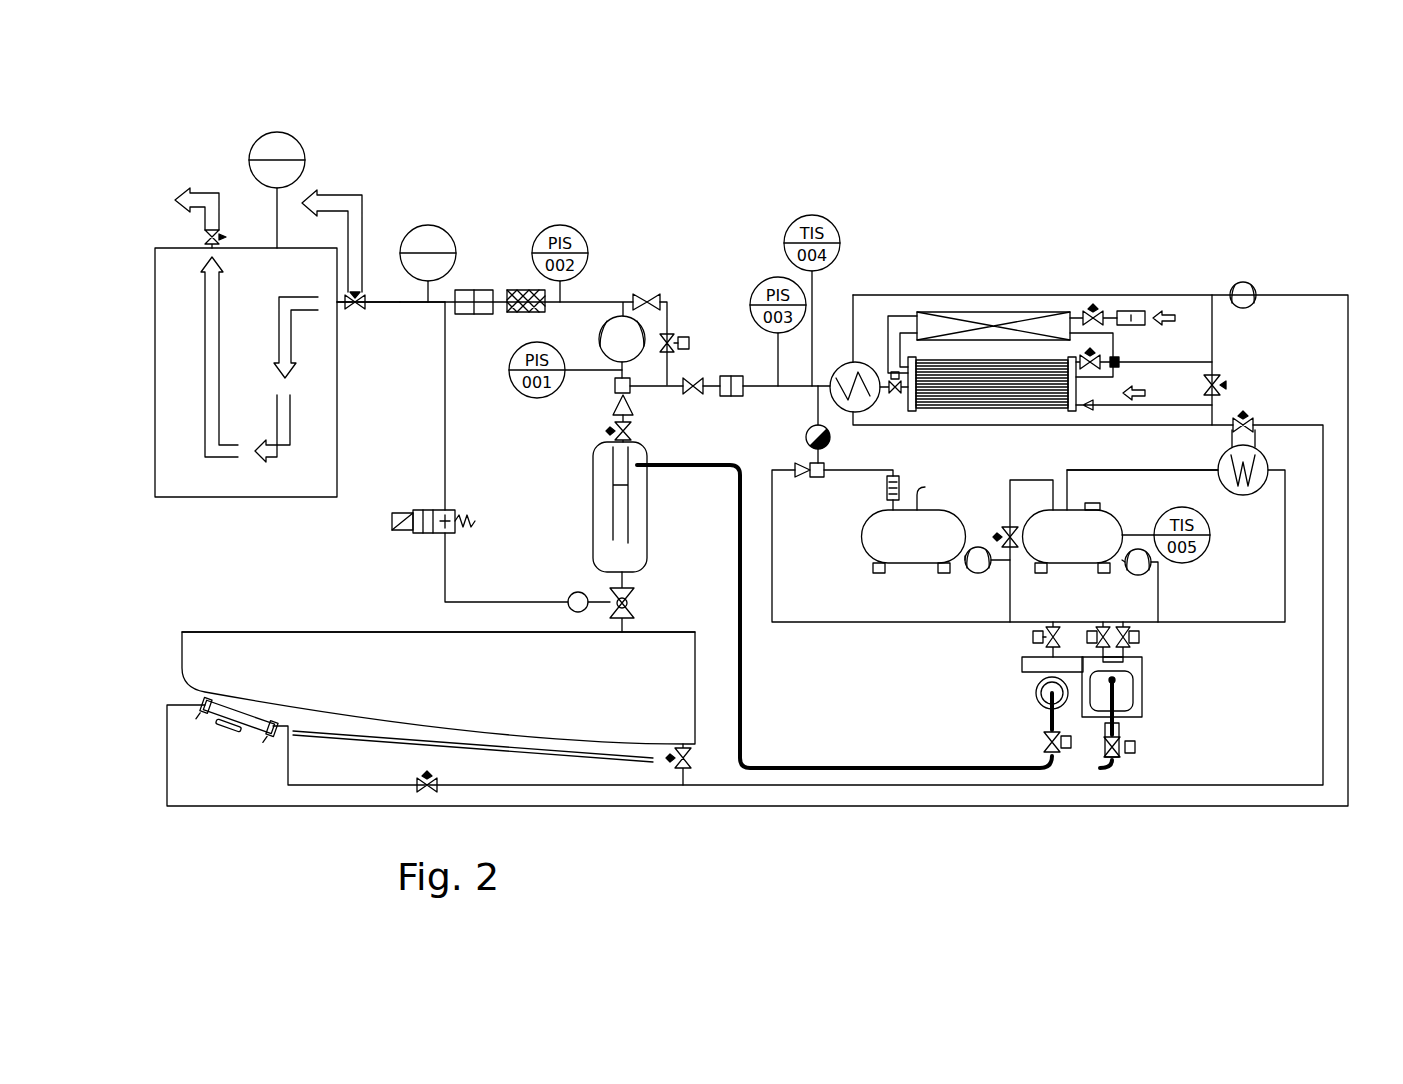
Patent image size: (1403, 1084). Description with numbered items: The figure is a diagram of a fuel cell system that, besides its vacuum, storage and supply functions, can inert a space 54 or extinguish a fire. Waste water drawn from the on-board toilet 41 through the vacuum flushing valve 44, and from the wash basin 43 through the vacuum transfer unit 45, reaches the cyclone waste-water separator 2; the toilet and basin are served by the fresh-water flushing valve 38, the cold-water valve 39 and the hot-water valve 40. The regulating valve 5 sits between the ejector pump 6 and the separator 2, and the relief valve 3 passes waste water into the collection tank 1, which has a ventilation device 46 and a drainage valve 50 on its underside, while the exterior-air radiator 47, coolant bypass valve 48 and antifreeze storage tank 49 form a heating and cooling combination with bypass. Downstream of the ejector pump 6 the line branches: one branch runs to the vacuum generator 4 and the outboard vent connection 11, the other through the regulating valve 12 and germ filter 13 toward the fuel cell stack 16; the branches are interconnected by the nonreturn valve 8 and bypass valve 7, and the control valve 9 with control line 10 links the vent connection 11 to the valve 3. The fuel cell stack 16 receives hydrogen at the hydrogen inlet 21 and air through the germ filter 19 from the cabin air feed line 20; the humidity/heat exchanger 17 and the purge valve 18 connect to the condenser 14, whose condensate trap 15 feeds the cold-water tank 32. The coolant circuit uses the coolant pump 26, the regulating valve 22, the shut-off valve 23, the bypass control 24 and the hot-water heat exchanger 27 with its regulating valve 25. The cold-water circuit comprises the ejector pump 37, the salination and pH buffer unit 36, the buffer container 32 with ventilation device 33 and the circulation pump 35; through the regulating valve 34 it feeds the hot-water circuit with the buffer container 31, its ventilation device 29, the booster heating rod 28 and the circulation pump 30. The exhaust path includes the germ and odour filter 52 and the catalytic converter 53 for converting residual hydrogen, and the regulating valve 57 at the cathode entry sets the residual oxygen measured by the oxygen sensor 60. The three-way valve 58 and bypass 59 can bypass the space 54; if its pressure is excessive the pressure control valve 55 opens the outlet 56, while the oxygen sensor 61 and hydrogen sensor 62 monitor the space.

The waste-water collection tank 1 is at (438, 688).
The cyclone waste-water separator 2 is at (647, 548).
The pneumatic relief valve 3 is at (630, 600).
The vacuum generator 4 is at (599, 343).
The regulating valve for vacuum transport 5 is at (632, 430).
The ejector pump 6 is at (613, 405).
The bypass valve 7 is at (689, 343).
The flap valve 8 is at (655, 297).
The control valve 9 is at (413, 516).
The vacuum control line 10 is at (445, 427).
The outboard vent connection 11 is at (373, 300).
The regulating valve for the airstream through the fuel cell 12 is at (700, 383).
The germ filter 13 is at (735, 396).
The condenser 14 is at (845, 368).
The condensate trap 15 is at (806, 435).
The fuel cell stack 16 is at (992, 384).
The humidity/heat exchanger 17 is at (993, 312).
The purge valve 18 is at (897, 392).
The germ filter 19 is at (1132, 311).
The cabin air feed line 20 is at (1177, 318).
The hydrogen inlet 21 is at (1148, 393).
The regulating valve of the cooling system 22 is at (1119, 362).
The shut-off valve 23 is at (1093, 406).
The bypass control of the cooling system 24 is at (1212, 378).
The regulating valve 25 is at (1250, 423).
The coolant pump 26 is at (1250, 307).
The heat exchanger 27 is at (1245, 495).
The electrical booster heating rod 28 is at (1100, 506).
The ventilation device 29 is at (1092, 495).
The circulation pump 30 is at (1150, 570).
The non-pressurised buffer container 31 is at (1073, 541).
The cold-water tank 32 is at (914, 541).
The ventilation device 33 is at (925, 487).
The regulating valve 34 is at (997, 535).
The circulation pump 35 is at (970, 568).
The salination- and pH buffer unit 36 is at (887, 488).
The ejector pump 37 is at (800, 478).
The fresh-water flushing valve 38 is at (1033, 637).
The cold-water valve 39 is at (1065, 639).
The hot-water valve 40 is at (1139, 637).
The on-board toilet 41 is at (1036, 690).
The wash basin 43 is at (1142, 690).
The vacuum flushing valve 44 is at (1044, 742).
The vacuum transfer unit 45 is at (1135, 747).
The ventilation device 46 is at (270, 632).
The exterior-air radiator 47 is at (252, 735).
The coolant bypass valve 48 is at (425, 790).
The antifreeze storage tank 49 is at (540, 758).
The waste-water drainage valve 50 is at (683, 772).
The germ- and odour filter 52 is at (474, 290).
The catalytic converter 53 is at (522, 290).
The space to be inerted 54 is at (246, 372).
The pressure control valve 55 is at (220, 233).
The outlet 56 is at (192, 194).
The regulating valve at the cathode entry 57 is at (1093, 305).
The three-way valve 58 is at (357, 312).
The bypass 59 is at (325, 200).
The oxygen sensor 60 is at (410, 304).
The oxygen sensor 61 is at (300, 152).
The hydrogen sensor 62 is at (444, 232).